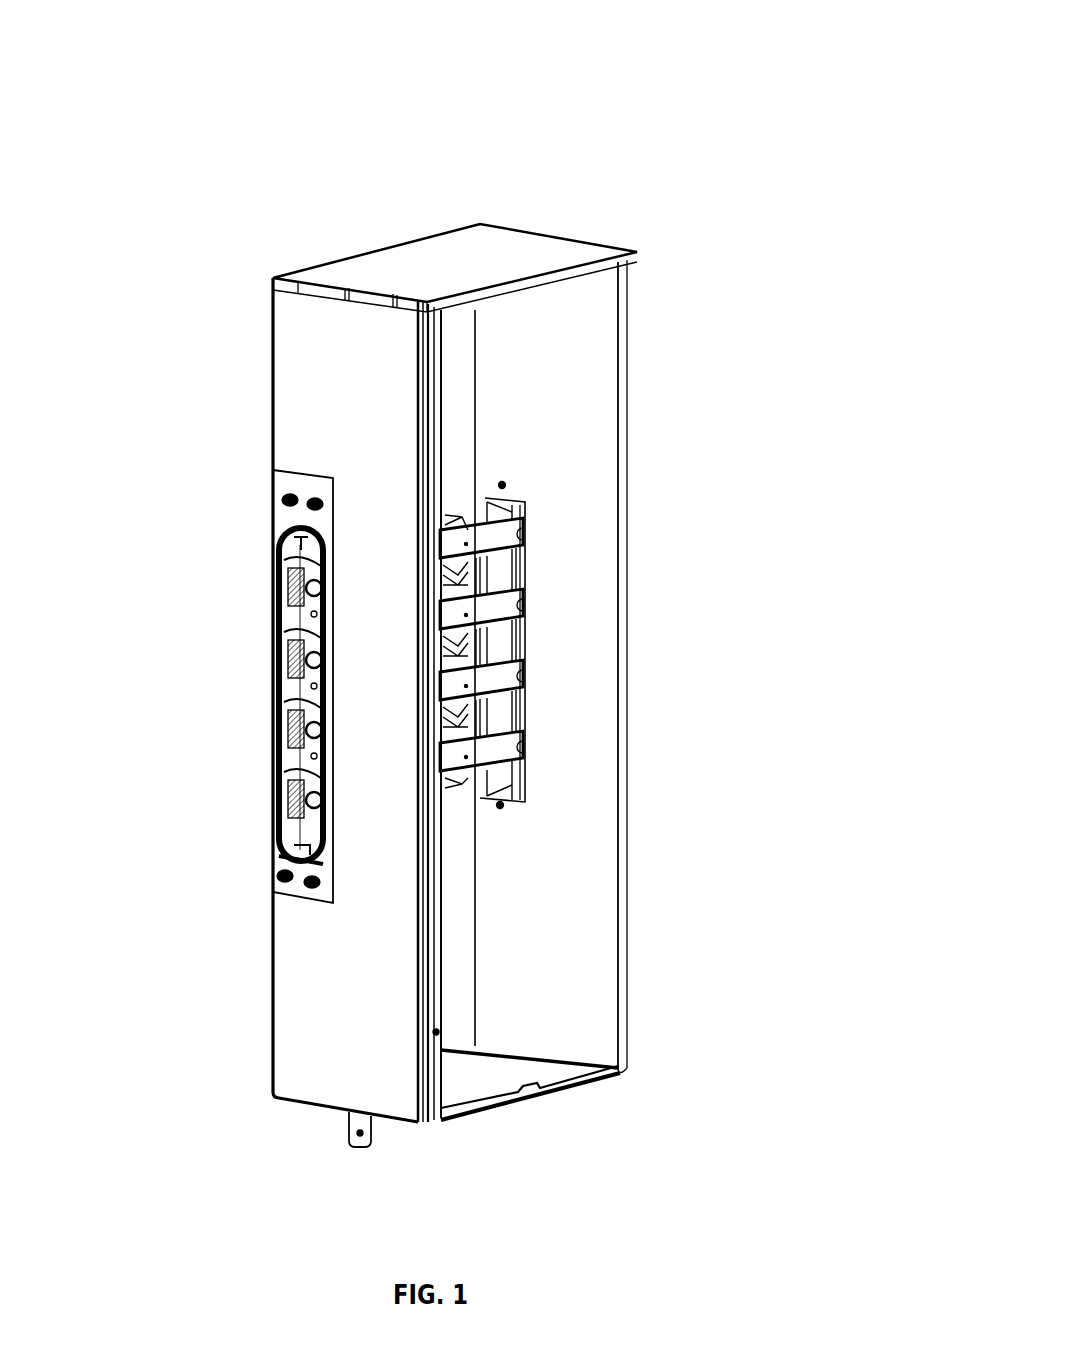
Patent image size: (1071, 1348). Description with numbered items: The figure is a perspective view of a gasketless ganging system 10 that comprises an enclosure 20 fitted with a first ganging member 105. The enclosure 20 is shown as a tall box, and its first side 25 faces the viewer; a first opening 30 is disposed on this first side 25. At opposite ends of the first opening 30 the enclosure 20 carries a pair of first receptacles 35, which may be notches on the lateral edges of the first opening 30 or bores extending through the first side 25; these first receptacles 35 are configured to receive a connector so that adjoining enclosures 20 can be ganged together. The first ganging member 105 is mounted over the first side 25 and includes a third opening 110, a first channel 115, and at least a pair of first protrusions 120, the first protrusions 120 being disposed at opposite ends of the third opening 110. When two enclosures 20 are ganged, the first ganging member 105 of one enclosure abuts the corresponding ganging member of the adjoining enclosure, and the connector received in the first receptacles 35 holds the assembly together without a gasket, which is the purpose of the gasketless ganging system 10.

The gasketless ganging system 10 is at (866, 47).
The enclosure 20 is at (405, 257).
The first side 25 is at (310, 333).
The first opening 30 is at (301, 544).
The pair of first receptacles 35 is at (303, 548).
The first ganging member 105 is at (272, 524).
The third opening 110 is at (277, 863).
The first channel 115 is at (270, 793).
The pair of first protrusions 120 is at (313, 500).